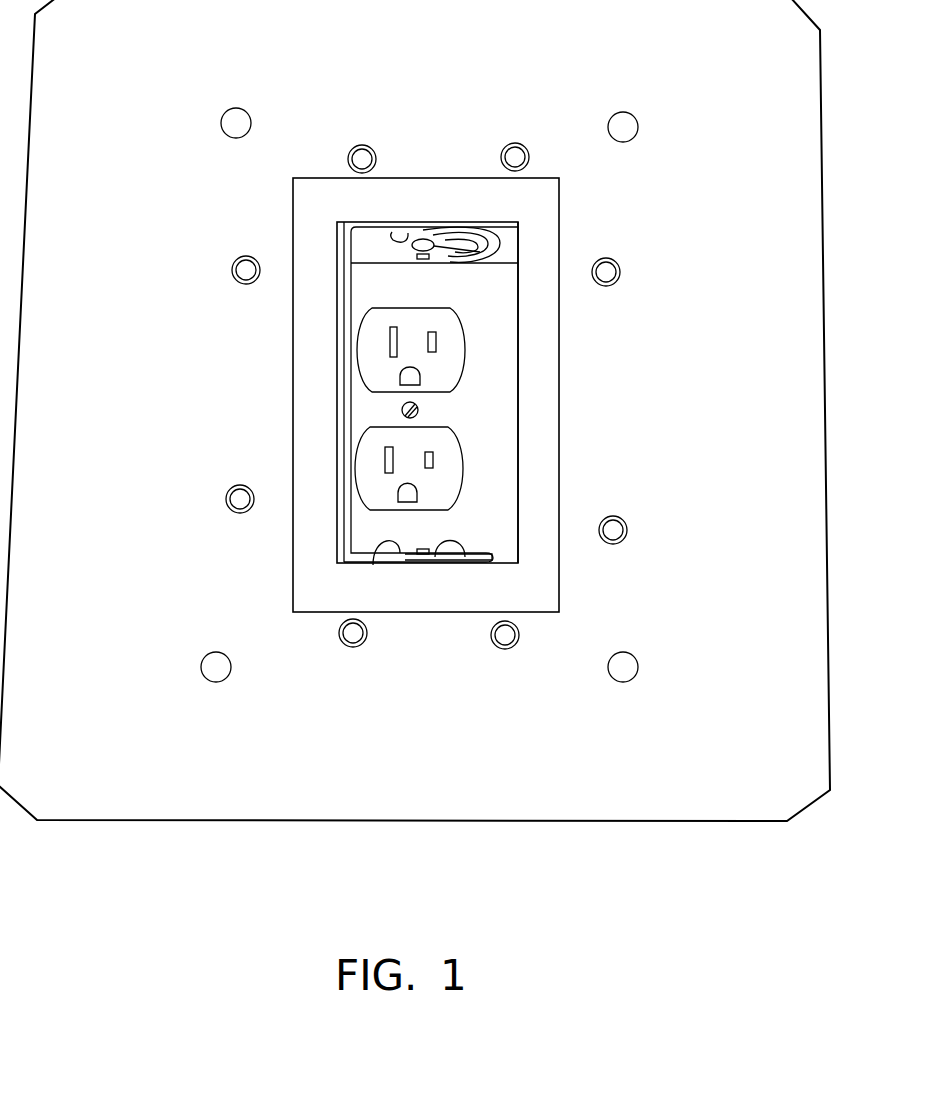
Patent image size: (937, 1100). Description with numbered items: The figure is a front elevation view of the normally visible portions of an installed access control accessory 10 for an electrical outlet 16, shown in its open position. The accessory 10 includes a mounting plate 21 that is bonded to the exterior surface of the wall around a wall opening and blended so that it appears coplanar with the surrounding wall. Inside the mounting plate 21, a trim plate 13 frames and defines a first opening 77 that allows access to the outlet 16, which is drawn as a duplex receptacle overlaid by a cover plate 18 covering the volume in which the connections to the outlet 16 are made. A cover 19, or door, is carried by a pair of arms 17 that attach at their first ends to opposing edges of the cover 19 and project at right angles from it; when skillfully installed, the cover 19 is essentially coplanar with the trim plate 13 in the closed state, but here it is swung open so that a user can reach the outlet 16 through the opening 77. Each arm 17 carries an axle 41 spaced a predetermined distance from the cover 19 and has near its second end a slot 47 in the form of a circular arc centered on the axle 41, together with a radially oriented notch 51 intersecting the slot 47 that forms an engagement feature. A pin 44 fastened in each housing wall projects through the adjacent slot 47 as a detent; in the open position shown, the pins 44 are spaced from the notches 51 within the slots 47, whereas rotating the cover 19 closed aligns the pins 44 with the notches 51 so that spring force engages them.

The access control accessory 10 is at (592, 892).
The trim plate 13 is at (547, 475).
The electrical outlet 16 is at (362, 337).
The arms 17 is at (408, 233).
The cover plate 18 is at (490, 433).
The cover 19 is at (342, 440).
The mounting plate 21 is at (718, 805).
The axle 41 is at (465, 260).
The pin 44 is at (425, 258).
The slot 47 is at (480, 238).
The notch 51 is at (495, 232).
The first opening 77 is at (519, 358).